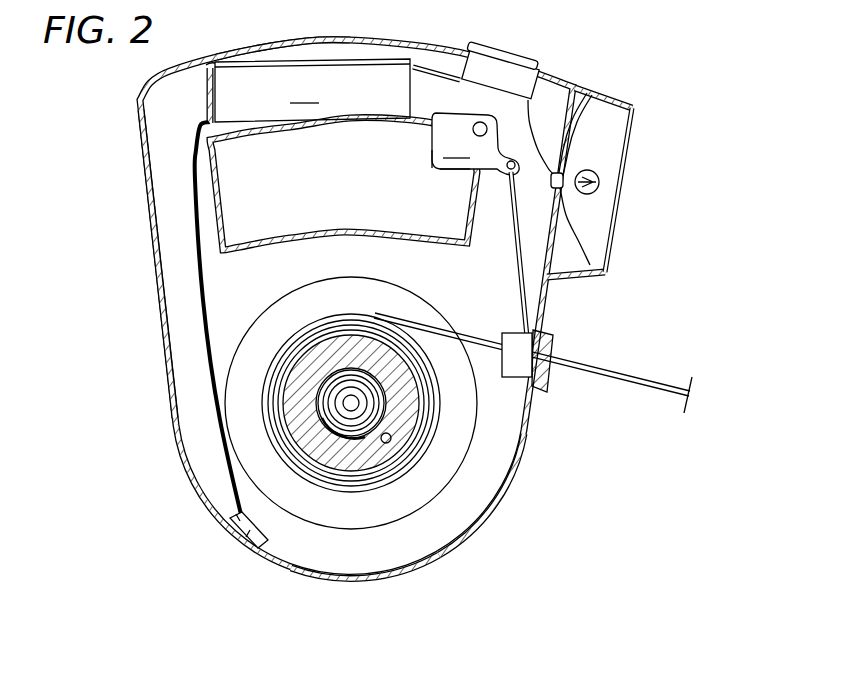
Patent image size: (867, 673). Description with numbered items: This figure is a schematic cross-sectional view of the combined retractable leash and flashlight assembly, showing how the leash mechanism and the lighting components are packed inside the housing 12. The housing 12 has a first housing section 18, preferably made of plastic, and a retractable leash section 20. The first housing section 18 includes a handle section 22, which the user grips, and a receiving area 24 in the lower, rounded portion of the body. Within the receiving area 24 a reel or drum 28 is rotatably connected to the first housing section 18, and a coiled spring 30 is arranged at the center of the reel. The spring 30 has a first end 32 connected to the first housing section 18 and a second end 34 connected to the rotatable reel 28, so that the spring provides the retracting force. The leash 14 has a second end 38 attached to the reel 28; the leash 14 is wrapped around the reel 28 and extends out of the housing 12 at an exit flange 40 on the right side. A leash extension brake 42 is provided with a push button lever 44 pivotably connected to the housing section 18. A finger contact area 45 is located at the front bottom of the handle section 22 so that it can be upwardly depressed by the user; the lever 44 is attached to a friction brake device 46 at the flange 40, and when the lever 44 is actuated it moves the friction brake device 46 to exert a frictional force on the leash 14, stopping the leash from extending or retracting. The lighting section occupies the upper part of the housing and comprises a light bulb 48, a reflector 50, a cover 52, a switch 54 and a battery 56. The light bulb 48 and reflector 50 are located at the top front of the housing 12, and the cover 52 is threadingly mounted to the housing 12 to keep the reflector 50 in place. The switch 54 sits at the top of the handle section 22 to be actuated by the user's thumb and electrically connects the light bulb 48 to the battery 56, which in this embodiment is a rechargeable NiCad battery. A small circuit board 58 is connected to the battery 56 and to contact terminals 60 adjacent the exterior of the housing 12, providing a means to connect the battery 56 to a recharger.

The housing 12 is at (134, 114).
The leash 14 is at (633, 378).
The first housing section 18 is at (140, 163).
The retractable leash section 20 is at (460, 443).
The handle section 22 is at (314, 45).
The receiving area 24 is at (320, 527).
The reel or drum 28 is at (358, 462).
The coiled spring 30 is at (328, 385).
The first end of spring 32 is at (357, 395).
The second end of spring 34 is at (389, 441).
The second end of leash 38 is at (287, 423).
The exit flange 40 is at (552, 378).
The leash extension brake 42 is at (479, 225).
The push button lever 44 is at (432, 161).
The finger contact area 45 is at (453, 169).
The friction brake device 46 is at (540, 333).
The light bulb 48 is at (600, 184).
The reflector 50 is at (588, 145).
The cover 52 is at (632, 137).
The switch 54 is at (497, 47).
The battery 56 is at (312, 90).
The circuit board 58 is at (203, 97).
The contact terminals 60 is at (234, 534).